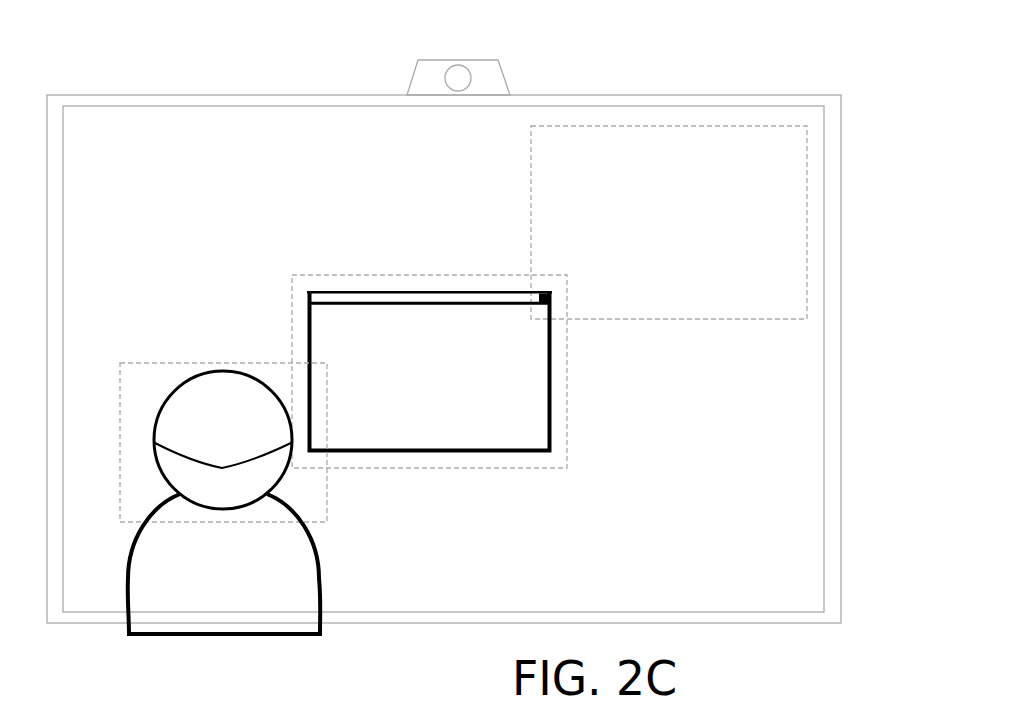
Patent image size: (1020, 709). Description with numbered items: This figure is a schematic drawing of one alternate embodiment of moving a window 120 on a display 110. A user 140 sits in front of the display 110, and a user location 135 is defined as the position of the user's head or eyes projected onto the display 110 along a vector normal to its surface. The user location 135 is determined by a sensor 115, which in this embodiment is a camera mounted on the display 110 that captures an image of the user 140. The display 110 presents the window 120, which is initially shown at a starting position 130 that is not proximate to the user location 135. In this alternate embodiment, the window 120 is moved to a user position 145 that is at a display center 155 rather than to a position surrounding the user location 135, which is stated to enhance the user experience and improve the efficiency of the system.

The display 110 is at (132, 95).
The sensor 115 is at (482, 60).
The window 120 is at (694, 145).
The starting position 130 is at (790, 320).
The user location 135 is at (120, 445).
The user 140 is at (320, 572).
The user position 145 is at (568, 413).
The display center 155 is at (428, 372).